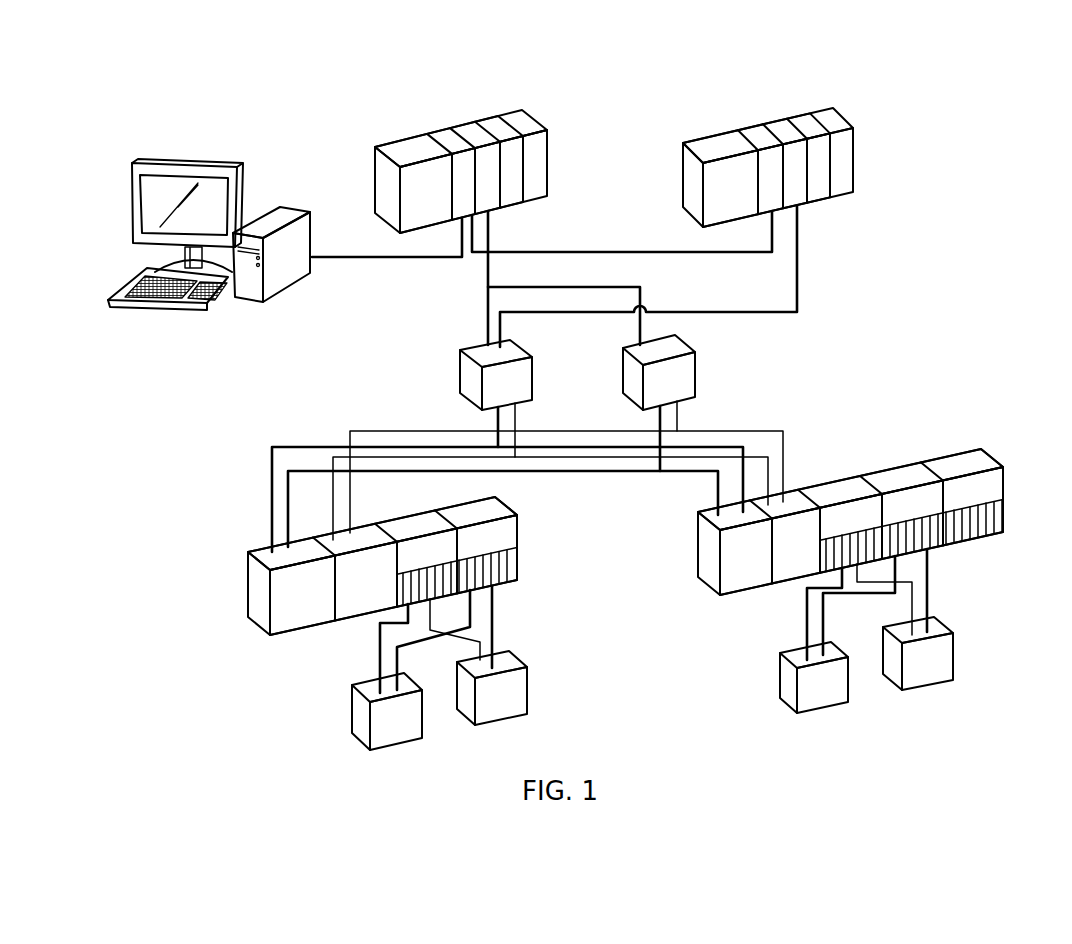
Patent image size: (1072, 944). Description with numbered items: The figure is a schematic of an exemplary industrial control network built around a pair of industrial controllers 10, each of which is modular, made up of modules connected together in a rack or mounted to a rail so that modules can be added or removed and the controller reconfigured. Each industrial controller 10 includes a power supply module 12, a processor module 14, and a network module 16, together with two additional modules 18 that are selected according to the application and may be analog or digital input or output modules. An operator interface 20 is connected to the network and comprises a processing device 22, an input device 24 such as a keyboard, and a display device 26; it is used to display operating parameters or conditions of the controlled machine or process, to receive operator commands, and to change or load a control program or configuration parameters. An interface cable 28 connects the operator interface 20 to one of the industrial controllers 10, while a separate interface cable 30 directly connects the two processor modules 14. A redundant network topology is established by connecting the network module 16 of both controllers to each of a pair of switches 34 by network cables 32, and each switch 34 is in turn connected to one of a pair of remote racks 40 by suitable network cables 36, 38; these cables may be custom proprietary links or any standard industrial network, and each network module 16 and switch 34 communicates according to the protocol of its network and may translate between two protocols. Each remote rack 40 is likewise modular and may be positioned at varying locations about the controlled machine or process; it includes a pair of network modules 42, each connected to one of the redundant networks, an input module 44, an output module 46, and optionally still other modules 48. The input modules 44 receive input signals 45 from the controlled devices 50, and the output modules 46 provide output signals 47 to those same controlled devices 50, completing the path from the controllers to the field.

The industrial controller 10 is at (369, 106).
The power supply module 12 is at (415, 143).
The processor module 14 is at (445, 139).
The network module 16 is at (476, 133).
The additional modules 18 is at (521, 121).
The operator interface 20 is at (104, 136).
The processing device 22 is at (283, 213).
The input device 24 is at (126, 286).
The display device 26 is at (128, 206).
The interface cable 28 is at (392, 258).
The interface cable 30 is at (621, 251).
The network cable 32 is at (491, 277).
The switch 34 is at (470, 377).
The network cable 36 is at (270, 500).
The network cable 38 is at (336, 507).
The remote rack 40 is at (230, 581).
The network module 42 is at (808, 561).
The input module 44 is at (864, 531).
The output module 46 is at (926, 516).
The other modules 48 is at (959, 503).
The input signals 45 is at (499, 607).
The output signals 47 is at (495, 638).
The controlled devices 50 is at (940, 673).